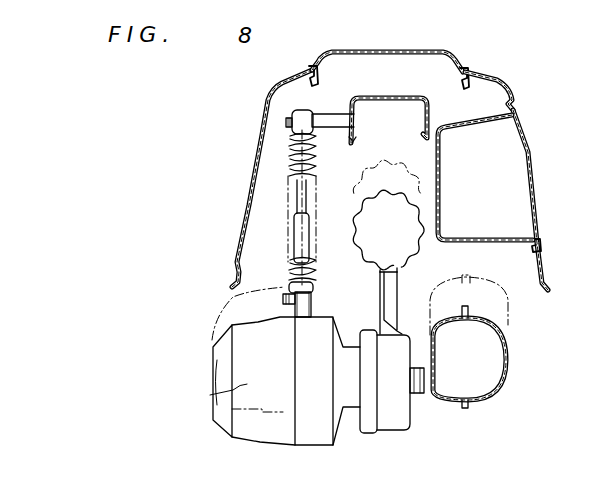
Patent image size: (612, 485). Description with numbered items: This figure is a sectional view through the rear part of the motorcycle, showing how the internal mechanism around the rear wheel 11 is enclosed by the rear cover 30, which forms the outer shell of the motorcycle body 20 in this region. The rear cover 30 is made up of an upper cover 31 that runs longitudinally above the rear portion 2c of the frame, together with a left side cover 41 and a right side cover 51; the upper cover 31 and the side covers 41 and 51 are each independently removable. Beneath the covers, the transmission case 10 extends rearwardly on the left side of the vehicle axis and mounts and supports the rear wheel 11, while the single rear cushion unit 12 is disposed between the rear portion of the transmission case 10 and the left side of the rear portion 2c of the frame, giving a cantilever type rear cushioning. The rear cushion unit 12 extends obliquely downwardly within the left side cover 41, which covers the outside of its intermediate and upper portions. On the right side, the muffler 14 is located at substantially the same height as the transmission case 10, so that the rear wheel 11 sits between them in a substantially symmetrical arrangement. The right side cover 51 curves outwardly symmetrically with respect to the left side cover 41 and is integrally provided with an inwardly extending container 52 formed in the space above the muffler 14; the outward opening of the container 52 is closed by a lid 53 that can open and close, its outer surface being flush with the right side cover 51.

The suspension unit 20 is at (352, 3).
The rear cover 30 is at (466, 40).
The upper cover 31 is at (416, 47).
The right side cover 51 is at (504, 73).
The lid 53 is at (540, 206).
The container 52 is at (440, 195).
The left side cover 41 is at (248, 131).
The rear portion 2c is at (398, 100).
The rear cushion unit 12 is at (288, 168).
The transmission case 10 is at (247, 386).
The rear wheel 11 is at (420, 243).
The muffler 14 is at (506, 374).